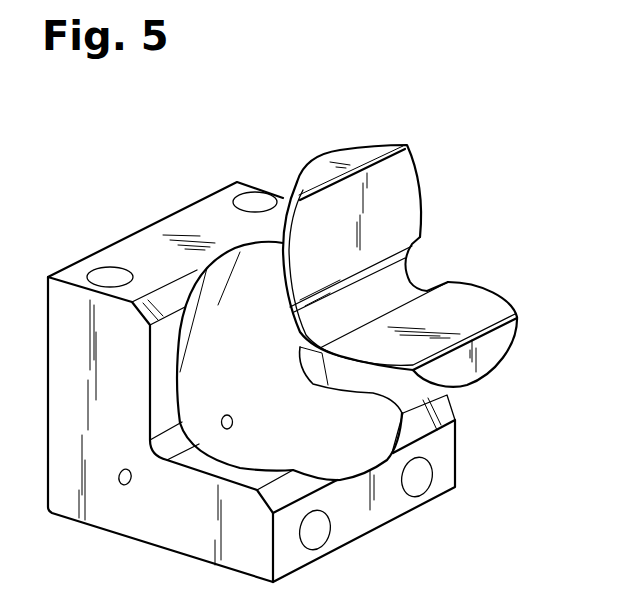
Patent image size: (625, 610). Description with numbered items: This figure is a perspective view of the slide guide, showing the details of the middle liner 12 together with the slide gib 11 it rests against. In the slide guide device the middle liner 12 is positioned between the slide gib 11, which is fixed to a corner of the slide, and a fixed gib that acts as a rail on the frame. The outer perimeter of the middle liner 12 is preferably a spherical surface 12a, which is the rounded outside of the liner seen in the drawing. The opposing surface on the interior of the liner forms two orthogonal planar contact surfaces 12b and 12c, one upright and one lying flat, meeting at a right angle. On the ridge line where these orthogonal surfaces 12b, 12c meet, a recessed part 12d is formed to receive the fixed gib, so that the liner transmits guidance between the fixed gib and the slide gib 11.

The slide gib 11 is at (137, 255).
The middle liner 12 is at (364, 257).
The spherical surface 12a is at (289, 203).
The planar contact surface 12b is at (413, 180).
The planar contact surface 12c is at (467, 310).
The recessed part 12d is at (424, 290).